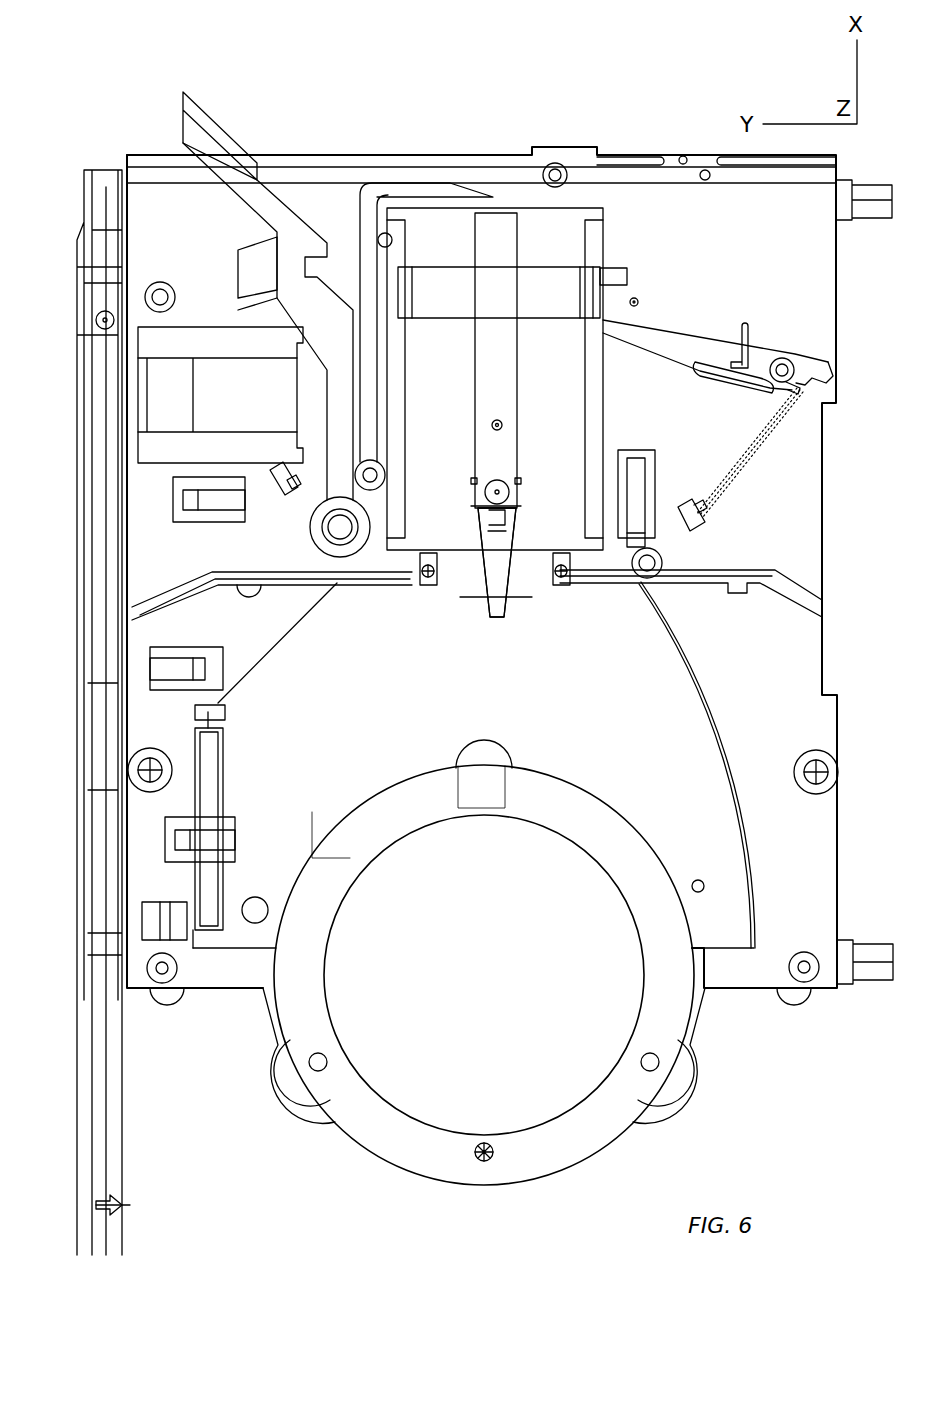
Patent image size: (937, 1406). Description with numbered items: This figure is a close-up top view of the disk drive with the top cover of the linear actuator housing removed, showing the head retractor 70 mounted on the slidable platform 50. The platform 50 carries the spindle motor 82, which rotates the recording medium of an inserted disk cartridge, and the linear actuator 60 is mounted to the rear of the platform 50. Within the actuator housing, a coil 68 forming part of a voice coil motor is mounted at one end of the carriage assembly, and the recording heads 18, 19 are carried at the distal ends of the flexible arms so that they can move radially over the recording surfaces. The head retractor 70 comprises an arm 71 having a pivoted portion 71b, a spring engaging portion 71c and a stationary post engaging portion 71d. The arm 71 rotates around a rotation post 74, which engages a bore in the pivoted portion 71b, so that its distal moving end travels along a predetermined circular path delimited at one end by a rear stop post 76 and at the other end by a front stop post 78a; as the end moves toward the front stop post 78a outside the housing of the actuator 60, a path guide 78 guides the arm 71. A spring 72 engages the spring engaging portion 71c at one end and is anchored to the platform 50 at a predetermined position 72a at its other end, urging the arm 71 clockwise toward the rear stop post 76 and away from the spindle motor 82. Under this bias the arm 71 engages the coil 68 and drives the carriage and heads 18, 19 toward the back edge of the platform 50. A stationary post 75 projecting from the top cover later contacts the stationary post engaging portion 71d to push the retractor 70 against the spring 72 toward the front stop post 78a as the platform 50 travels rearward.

The recording head 18 is at (505, 615).
The recording head 19 is at (497, 562).
The slidable platform 50 is at (510, 576).
The linear actuator 60 is at (380, 204).
The coil 68 is at (557, 305).
The head retractor 70 is at (745, 333).
The arm 71 is at (655, 333).
The pivoted portion 71b is at (780, 357).
The spring engaging portion 71c is at (806, 360).
The stationary post engaging portion 71d is at (722, 378).
The spring 72 is at (762, 447).
The predetermined position 72a is at (704, 522).
The rotation post 74 is at (788, 386).
The stationary post 75 is at (752, 322).
The rear stop post 76 is at (637, 297).
The path guide 78 is at (645, 480).
The front stop post 78a is at (650, 545).
The spindle motor 82 is at (498, 986).